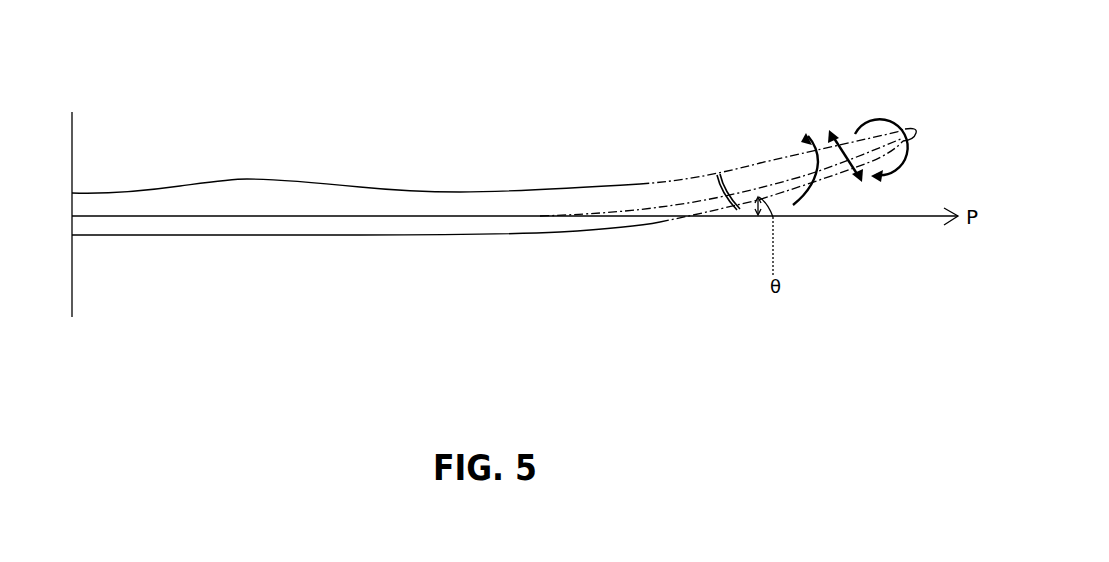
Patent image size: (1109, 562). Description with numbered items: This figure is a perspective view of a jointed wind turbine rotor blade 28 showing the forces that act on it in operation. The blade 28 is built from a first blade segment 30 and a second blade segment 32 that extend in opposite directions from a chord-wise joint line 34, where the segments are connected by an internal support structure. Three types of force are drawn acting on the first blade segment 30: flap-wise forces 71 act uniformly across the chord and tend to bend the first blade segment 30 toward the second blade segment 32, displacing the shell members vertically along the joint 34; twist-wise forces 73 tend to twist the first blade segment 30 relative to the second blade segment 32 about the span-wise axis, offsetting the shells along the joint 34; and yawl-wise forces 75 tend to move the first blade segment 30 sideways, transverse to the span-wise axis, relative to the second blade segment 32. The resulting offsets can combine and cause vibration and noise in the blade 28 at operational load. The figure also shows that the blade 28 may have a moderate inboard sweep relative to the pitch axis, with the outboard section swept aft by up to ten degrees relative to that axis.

The jointed rotor blade 28 is at (483, 139).
The first blade segment 30 is at (832, 184).
The second blade segment 32 is at (447, 236).
The chord-wise joint line 34 is at (720, 175).
The flap-wise forces 71 is at (804, 158).
The twist-wise forces 73 is at (878, 117).
The yawl-wise forces 75 is at (831, 128).